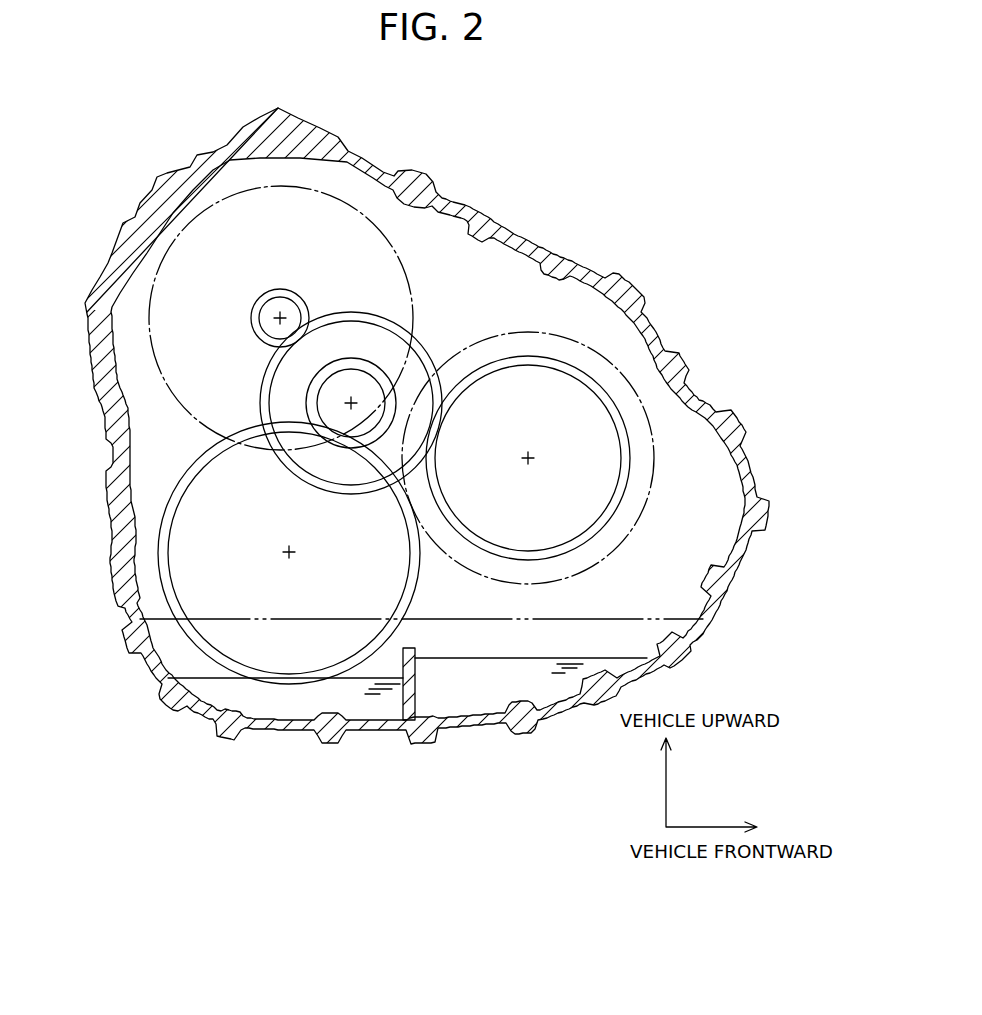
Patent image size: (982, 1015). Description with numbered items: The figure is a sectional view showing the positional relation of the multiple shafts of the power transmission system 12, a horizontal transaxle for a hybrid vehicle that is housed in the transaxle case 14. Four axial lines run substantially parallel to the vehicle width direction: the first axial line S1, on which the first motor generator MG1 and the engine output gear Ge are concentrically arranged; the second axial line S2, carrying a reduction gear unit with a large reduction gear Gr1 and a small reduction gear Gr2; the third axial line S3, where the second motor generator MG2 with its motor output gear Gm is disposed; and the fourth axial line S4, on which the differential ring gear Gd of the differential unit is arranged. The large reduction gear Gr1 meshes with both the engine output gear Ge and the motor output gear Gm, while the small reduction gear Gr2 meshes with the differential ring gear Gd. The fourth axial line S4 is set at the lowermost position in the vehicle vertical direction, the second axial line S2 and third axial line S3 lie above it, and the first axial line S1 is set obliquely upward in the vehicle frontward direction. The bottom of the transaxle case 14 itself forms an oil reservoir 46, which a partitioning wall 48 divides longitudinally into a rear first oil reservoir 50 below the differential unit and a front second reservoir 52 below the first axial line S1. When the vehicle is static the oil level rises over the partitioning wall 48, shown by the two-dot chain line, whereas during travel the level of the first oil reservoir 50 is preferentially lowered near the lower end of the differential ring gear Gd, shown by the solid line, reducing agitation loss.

The power transmission system 12 is at (491, 507).
The transaxle case 14 is at (670, 358).
The oil reservoir 46 is at (634, 600).
The partitioning wall 48 is at (416, 698).
The first oil reservoir 50 is at (287, 711).
The second reservoir 52 is at (527, 690).
The first motor generator MG1 is at (656, 458).
The second motor generator MG2 is at (190, 218).
The engine output gear Ge is at (579, 370).
The motor output gear Gm is at (251, 320).
The large reduction gear Gr1 is at (423, 353).
The small reduction gear Gr2 is at (313, 413).
The differential ring gear Gd is at (168, 581).
The first axial line S1 is at (540, 447).
The second axial line S2 is at (361, 393).
The third axial line S3 is at (277, 315).
The fourth axial line S4 is at (279, 540).